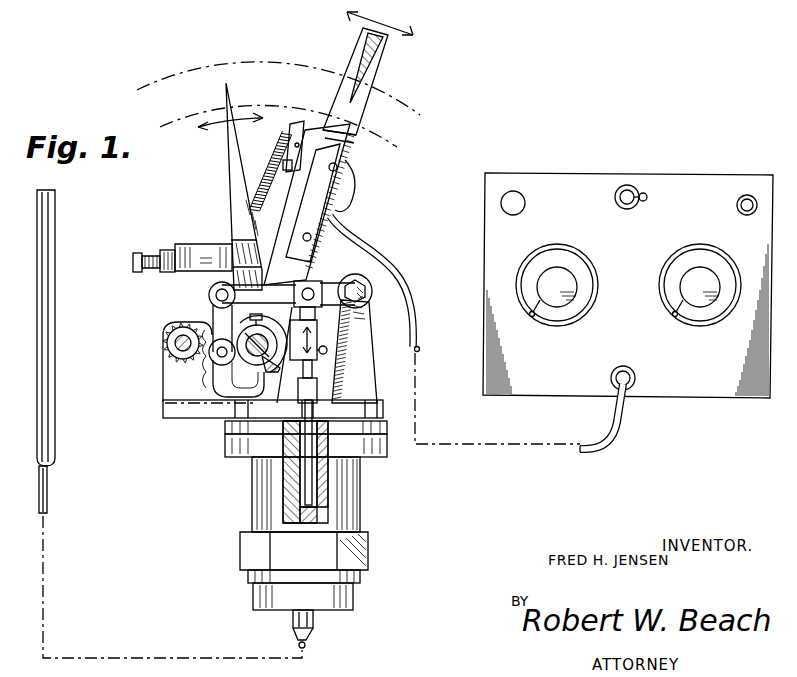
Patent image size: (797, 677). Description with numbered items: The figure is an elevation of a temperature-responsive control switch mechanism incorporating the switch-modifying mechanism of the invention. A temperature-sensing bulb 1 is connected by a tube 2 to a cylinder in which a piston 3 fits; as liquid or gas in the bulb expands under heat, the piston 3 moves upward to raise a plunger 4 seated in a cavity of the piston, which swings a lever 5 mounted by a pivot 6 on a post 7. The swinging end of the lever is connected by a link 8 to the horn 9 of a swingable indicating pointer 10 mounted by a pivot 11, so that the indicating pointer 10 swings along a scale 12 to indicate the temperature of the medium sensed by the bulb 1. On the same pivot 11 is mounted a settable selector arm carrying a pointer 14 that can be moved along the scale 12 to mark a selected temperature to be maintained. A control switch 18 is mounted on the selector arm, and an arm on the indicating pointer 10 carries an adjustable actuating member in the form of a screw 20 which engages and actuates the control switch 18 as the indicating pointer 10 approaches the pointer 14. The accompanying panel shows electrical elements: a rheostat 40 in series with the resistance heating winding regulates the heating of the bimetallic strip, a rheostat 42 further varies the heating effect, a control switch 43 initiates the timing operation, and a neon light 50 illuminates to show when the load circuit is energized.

The temperature-sensing bulb 1 is at (52, 334).
The tube 2 is at (47, 492).
The piston 3 is at (302, 522).
The plunger 4 is at (304, 488).
The lever 5 is at (331, 288).
The pivot 6 is at (365, 291).
The post 7 is at (357, 363).
The link 8 is at (212, 316).
The horn 9 is at (216, 388).
The indicating pointer 10 is at (232, 183).
The pivot 11 is at (266, 364).
The scale 12 is at (260, 72).
The pointer 14 is at (380, 61).
The control switch 18 is at (357, 140).
The screw 20 is at (133, 264).
The rheostat 40 is at (697, 287).
The rheostat 42 is at (562, 287).
The control switch 43 is at (642, 195).
The neon light 50 is at (515, 191).